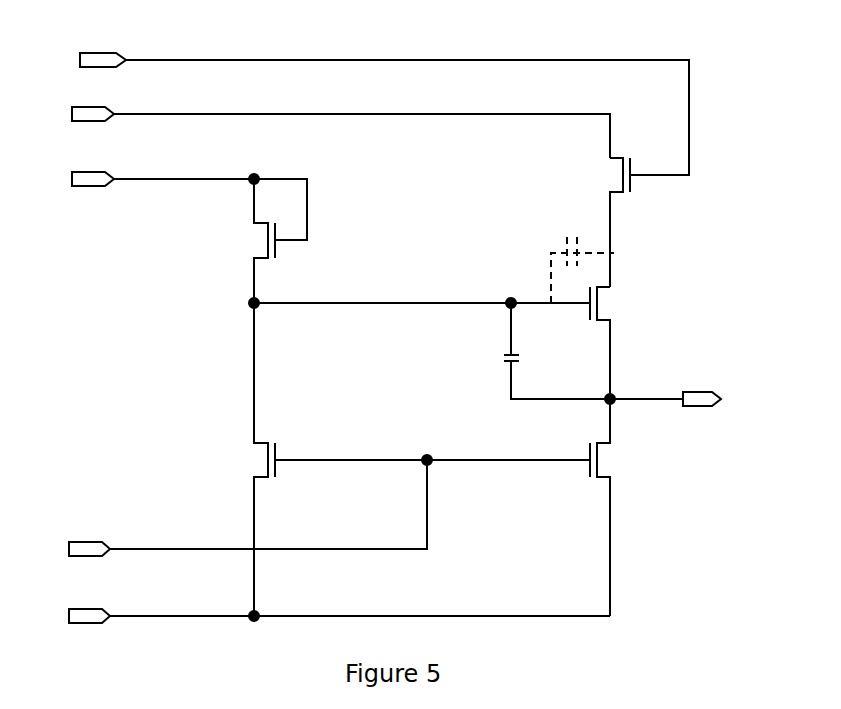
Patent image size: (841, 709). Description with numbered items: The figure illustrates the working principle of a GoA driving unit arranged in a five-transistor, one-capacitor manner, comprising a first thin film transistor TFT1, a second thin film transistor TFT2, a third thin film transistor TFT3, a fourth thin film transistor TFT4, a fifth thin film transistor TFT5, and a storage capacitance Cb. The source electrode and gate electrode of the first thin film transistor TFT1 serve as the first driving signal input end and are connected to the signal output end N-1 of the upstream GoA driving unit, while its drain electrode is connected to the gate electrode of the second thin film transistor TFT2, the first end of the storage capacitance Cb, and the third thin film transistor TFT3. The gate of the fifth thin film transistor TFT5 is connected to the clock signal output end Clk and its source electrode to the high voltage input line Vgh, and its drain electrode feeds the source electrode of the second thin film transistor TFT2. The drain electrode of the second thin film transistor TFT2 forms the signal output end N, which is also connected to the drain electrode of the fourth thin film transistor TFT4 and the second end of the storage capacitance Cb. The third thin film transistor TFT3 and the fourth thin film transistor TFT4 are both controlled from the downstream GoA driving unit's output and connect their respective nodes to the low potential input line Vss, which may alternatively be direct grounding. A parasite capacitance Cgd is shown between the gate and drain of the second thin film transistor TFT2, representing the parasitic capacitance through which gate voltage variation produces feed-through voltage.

The first thin film transistor TFT1 is at (236, 241).
The second thin film transistor TFT2 is at (628, 343).
The third thin film transistor TFT3 is at (317, 459).
The fourth thin film transistor TFT4 is at (543, 507).
The fifth thin film transistor TFT5 is at (594, 222).
The parasite capacitance Cgd is at (581, 258).
The storage capacitance Cb is at (557, 351).
The clock signal output end Clk is at (366, 113).
The high voltage input line Vgh is at (323, 131).
The signal output end of upstream GoA driving unit N-1 is at (171, 205).
The low potential input line Vss is at (323, 616).
The signal output end N is at (674, 400).